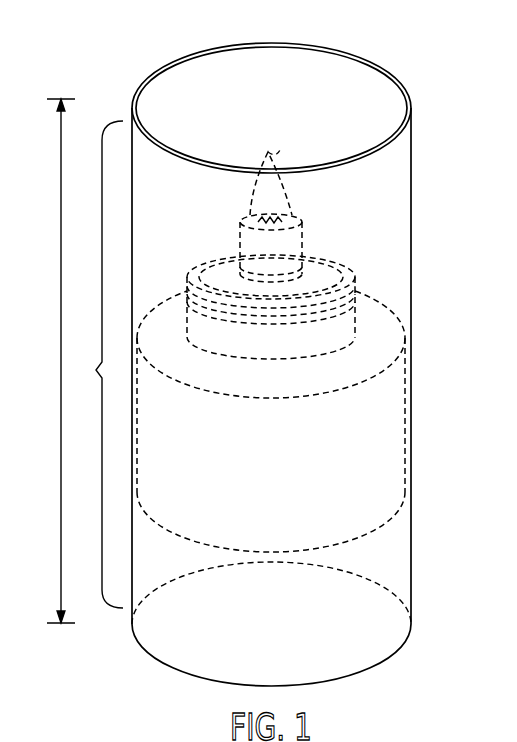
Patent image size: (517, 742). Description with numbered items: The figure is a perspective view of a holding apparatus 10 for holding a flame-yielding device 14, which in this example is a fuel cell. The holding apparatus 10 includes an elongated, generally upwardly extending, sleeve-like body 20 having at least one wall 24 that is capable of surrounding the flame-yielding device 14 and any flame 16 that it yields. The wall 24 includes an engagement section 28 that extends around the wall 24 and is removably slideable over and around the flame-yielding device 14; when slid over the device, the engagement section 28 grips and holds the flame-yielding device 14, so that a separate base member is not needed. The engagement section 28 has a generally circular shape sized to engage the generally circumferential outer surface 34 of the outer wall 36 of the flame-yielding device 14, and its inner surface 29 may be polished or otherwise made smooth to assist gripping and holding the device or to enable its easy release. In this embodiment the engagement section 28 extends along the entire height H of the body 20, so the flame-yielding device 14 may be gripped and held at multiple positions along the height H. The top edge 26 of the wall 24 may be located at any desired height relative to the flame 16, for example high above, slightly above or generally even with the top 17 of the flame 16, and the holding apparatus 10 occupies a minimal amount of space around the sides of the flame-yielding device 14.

The holding apparatus 10 is at (455, 104).
The flame-yielding device 14 is at (401, 313).
The flame 16 is at (253, 197).
The top of the flame 17 is at (266, 150).
The body 20 is at (412, 244).
The wall 24 is at (412, 510).
The top edge 26 is at (143, 80).
The engagement section 28 is at (97, 371).
The inner surface 29 is at (237, 78).
The outer surface 34 is at (387, 393).
The outer wall 36 is at (392, 443).
The height H is at (60, 368).